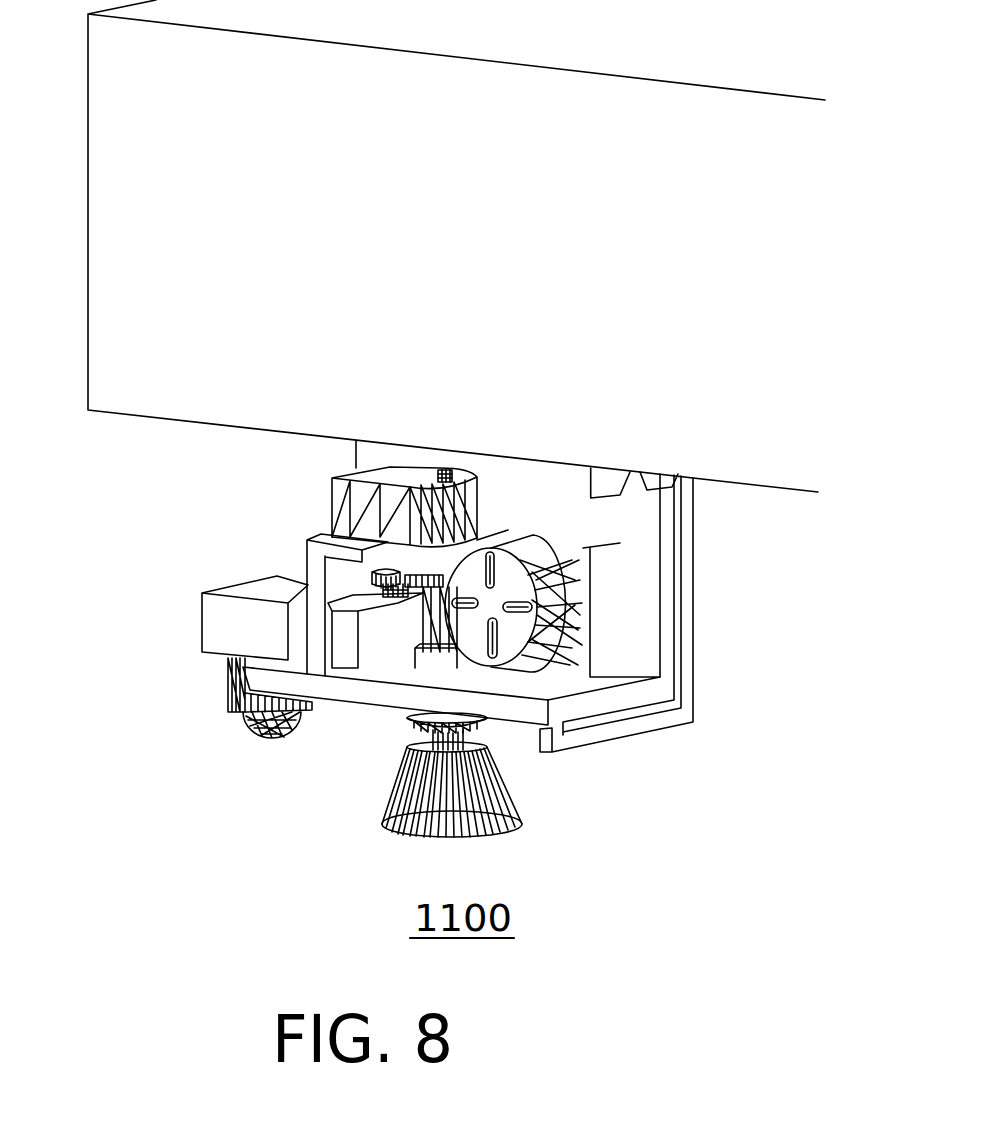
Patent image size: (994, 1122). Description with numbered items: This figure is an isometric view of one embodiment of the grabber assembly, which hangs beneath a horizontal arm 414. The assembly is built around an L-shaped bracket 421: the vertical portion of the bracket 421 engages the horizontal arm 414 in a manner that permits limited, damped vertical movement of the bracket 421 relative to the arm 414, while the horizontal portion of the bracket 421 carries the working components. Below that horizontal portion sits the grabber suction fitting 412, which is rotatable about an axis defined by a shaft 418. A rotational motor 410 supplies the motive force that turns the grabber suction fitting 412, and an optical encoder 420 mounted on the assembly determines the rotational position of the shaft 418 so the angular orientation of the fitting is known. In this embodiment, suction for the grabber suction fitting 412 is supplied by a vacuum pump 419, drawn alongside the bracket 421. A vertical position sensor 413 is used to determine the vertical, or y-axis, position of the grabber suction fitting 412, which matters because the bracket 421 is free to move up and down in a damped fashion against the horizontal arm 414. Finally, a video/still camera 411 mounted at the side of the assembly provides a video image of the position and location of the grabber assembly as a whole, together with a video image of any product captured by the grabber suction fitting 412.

The rotational motor 410 is at (370, 647).
The video/still camera 411 is at (228, 670).
The grabber/suction fitting 412 is at (388, 801).
The vertical position sensor 413 is at (410, 720).
The horizontal arm 414 is at (285, 297).
The shaft 418 is at (447, 469).
The vacuum pump 419 is at (580, 614).
The optical encoder 420 is at (365, 502).
The bracket 421 is at (692, 547).